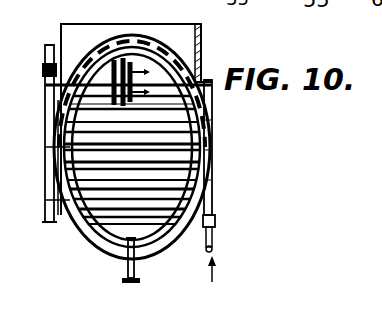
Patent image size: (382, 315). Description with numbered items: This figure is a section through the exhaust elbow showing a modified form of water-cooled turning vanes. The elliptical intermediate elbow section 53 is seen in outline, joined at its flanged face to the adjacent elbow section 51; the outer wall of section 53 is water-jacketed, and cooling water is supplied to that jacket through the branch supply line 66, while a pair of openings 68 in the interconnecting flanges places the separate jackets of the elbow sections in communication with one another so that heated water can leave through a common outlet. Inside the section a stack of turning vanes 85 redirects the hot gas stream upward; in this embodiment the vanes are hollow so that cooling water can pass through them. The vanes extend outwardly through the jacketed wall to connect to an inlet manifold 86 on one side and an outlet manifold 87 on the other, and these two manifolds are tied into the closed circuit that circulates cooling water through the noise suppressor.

The elbow section 51 is at (206, 32).
The intermediate elbow section 53 is at (90, 238).
The branch supply line 66 is at (136, 270).
The openings 68 is at (128, 66).
The turning vanes 85 is at (58, 145).
The inlet manifold 86 is at (217, 177).
The outlet manifold 87 is at (45, 107).